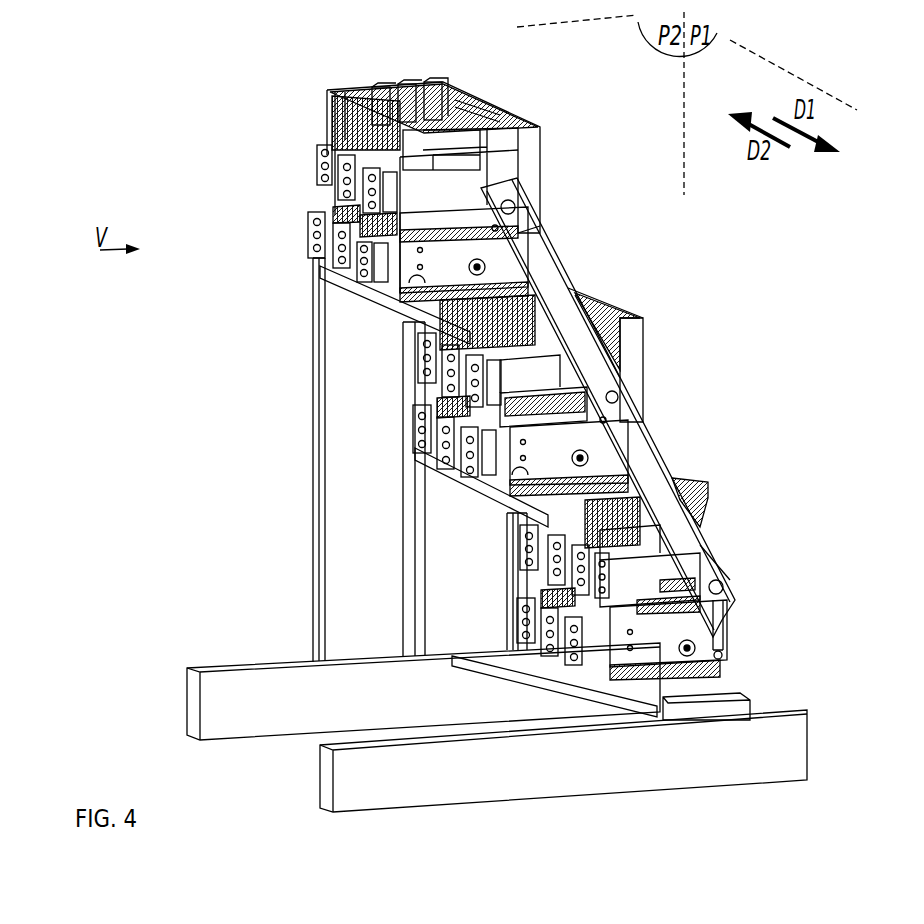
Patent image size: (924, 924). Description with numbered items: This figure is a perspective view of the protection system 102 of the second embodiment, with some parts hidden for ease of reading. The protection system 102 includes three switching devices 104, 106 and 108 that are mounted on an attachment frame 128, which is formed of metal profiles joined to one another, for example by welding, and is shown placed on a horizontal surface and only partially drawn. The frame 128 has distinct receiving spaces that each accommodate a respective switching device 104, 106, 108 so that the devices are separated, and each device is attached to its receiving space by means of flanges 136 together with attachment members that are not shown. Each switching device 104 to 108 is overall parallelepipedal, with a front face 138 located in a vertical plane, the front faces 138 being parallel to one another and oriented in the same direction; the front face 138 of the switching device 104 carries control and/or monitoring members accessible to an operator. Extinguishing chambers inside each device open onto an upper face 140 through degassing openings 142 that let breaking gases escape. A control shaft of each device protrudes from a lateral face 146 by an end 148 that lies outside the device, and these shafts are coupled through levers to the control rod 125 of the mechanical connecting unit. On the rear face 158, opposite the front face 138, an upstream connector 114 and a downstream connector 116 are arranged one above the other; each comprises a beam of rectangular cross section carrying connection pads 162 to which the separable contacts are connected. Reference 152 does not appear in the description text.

The protection system 102 is at (160, 127).
The switching device 104 is at (707, 497).
The switching device 106 is at (645, 325).
The switching device 108 is at (497, 113).
The upstream connector 114 is at (318, 185).
The downstream connector 116 is at (308, 253).
The control rod 125 is at (722, 630).
The attachment frame 128 is at (245, 703).
The flange 136 is at (723, 673).
The front face 138 is at (556, 174).
The upper face 140 is at (478, 96).
The degassing opening 142 is at (427, 80).
The lateral face 146 is at (545, 200).
The end of the control shaft 148 is at (628, 408).
The rail lower end 152 is at (700, 553).
The rear face 158 is at (318, 121).
The connection pads 162 is at (323, 318).